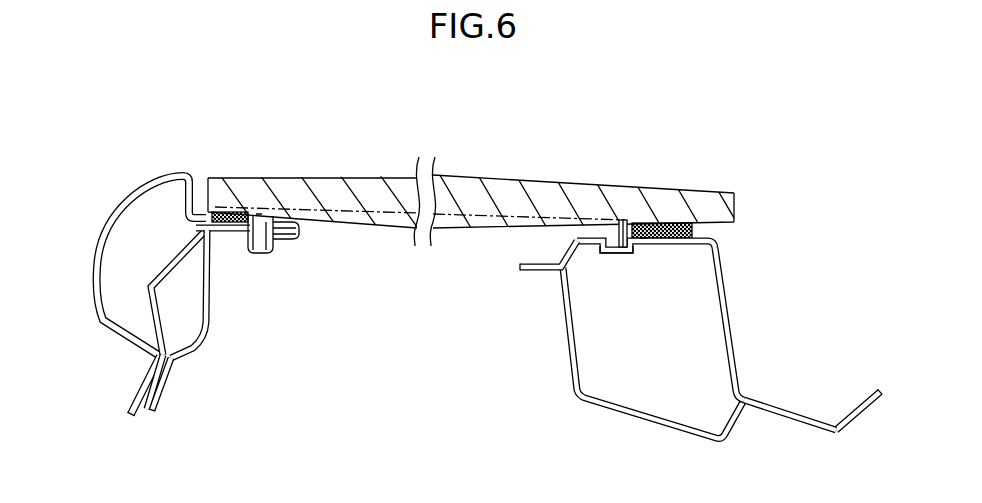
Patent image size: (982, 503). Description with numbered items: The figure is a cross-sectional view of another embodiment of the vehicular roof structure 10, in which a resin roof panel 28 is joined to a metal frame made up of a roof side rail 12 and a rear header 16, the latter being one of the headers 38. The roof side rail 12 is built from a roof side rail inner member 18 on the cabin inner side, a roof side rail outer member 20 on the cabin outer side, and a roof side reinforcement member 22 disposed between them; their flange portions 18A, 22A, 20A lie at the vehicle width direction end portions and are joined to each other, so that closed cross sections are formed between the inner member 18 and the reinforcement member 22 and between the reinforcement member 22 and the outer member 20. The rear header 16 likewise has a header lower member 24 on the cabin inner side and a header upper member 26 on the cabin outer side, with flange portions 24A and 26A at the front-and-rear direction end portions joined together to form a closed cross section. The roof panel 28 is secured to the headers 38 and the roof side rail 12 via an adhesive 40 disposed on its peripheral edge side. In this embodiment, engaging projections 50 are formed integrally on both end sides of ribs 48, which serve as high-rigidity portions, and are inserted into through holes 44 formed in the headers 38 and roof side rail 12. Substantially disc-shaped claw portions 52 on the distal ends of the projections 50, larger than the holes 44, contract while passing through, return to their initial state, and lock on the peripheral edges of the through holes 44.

The vehicular roof structure 10 is at (708, 115).
The roof side rail 12 is at (88, 172).
The rear header 16 is at (745, 286).
The headers 38 is at (646, 245).
The roof side rail inner member 18 is at (207, 330).
The flange portion 18A is at (166, 388).
The roof side rail outer member 20 is at (103, 229).
The flange portion 20A is at (131, 405).
The roof side reinforcement member 22 is at (150, 303).
The flange portion 22A is at (152, 400).
The header lower member 24 is at (567, 357).
The flange portion 24A is at (538, 273).
The header upper member 26 is at (728, 322).
The flange portion 26A is at (527, 264).
The roof panel 28 is at (472, 174).
The adhesive 40 is at (204, 217).
The through hole 44 is at (262, 254).
The rib 48 is at (461, 229).
The engaging projection 50 is at (258, 216).
The claw portion 52 is at (251, 254).